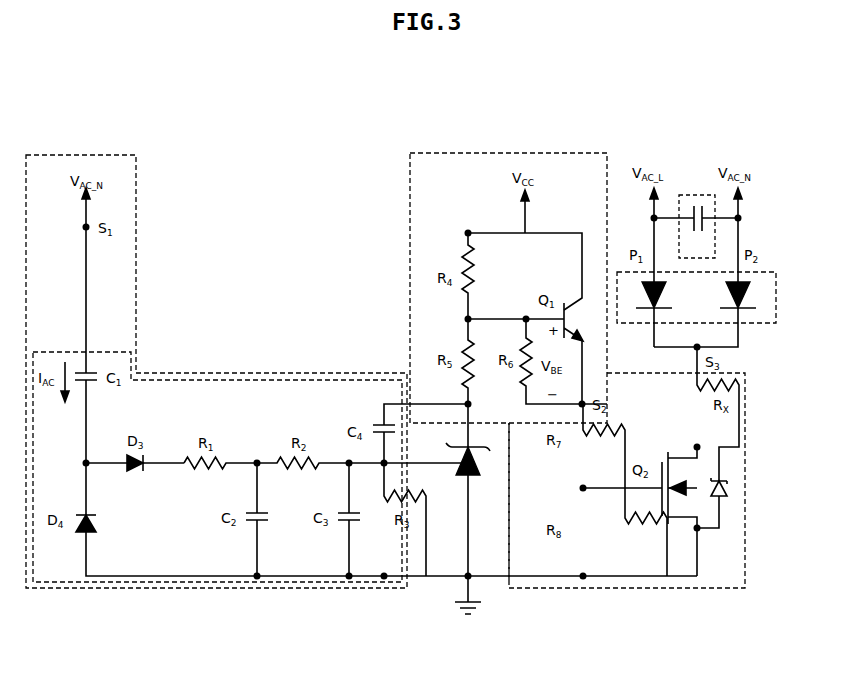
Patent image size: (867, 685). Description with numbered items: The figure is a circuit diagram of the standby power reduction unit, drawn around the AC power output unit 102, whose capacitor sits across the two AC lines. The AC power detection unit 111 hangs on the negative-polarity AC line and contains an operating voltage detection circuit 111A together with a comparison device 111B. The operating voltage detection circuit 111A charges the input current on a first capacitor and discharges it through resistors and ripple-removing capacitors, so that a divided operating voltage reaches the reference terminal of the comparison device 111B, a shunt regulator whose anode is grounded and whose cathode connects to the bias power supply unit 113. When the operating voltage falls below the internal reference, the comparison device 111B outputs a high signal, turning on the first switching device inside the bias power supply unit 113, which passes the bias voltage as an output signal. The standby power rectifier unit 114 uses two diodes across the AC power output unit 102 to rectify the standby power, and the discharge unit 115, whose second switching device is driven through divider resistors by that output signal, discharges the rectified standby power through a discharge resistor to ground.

The AC power output unit 102 is at (697, 195).
The AC power detection unit 111 is at (80, 155).
The operating voltage detection circuit 111A is at (228, 379).
The comparison device 111B is at (481, 467).
The bias power supply unit 113 is at (508, 153).
The standby power rectifier unit 114 is at (776, 300).
The discharge unit 115 is at (658, 588).